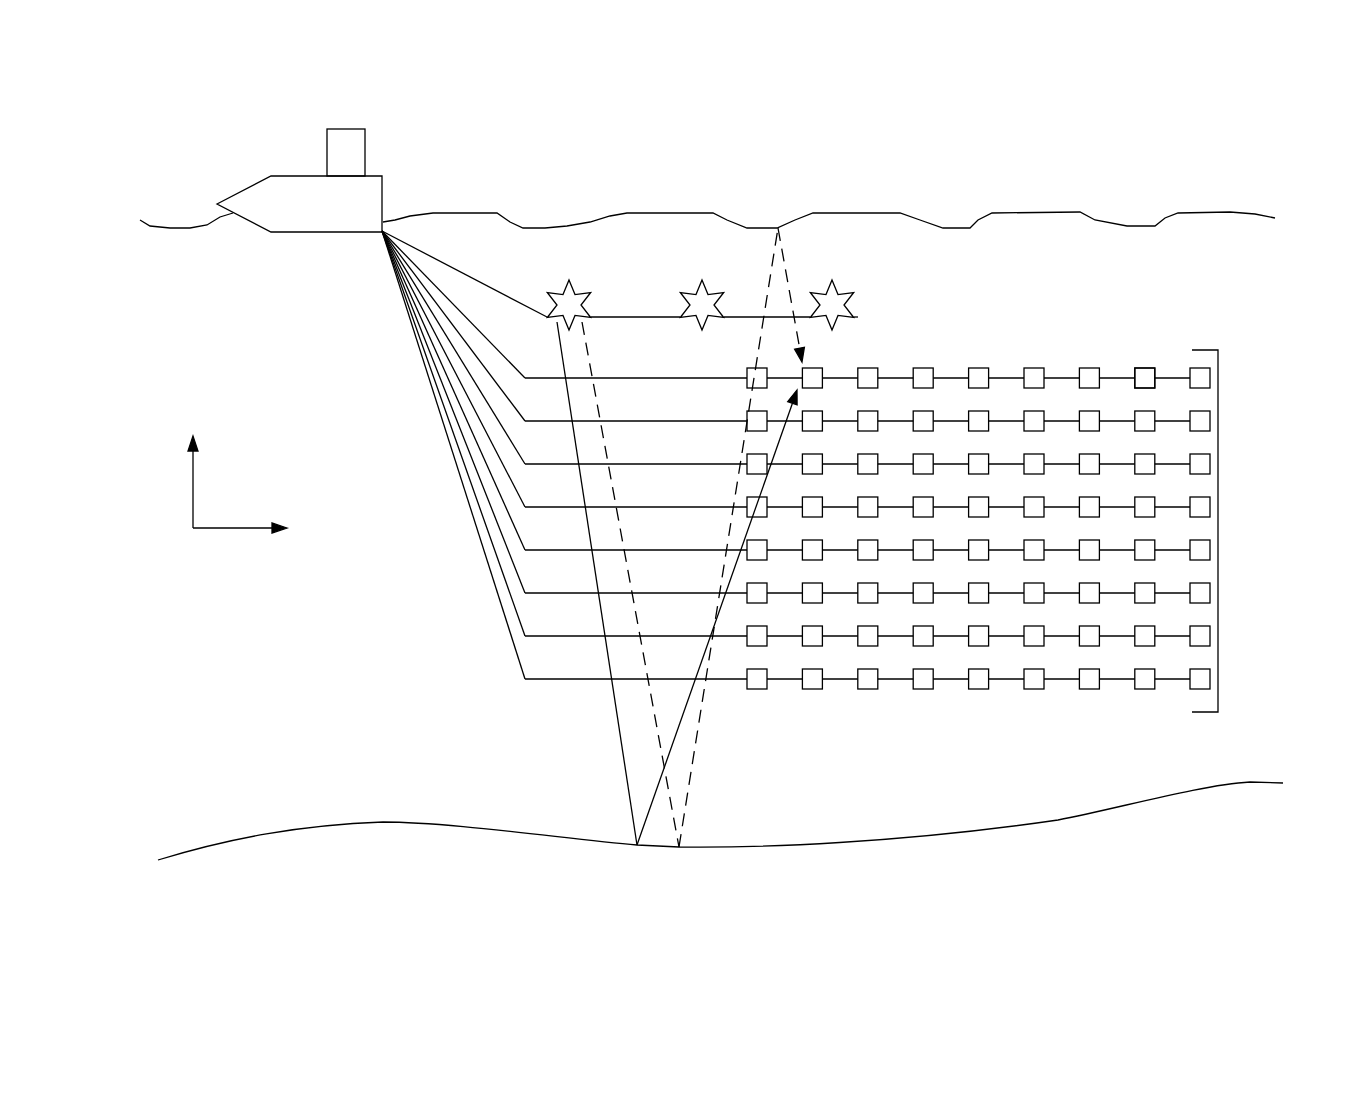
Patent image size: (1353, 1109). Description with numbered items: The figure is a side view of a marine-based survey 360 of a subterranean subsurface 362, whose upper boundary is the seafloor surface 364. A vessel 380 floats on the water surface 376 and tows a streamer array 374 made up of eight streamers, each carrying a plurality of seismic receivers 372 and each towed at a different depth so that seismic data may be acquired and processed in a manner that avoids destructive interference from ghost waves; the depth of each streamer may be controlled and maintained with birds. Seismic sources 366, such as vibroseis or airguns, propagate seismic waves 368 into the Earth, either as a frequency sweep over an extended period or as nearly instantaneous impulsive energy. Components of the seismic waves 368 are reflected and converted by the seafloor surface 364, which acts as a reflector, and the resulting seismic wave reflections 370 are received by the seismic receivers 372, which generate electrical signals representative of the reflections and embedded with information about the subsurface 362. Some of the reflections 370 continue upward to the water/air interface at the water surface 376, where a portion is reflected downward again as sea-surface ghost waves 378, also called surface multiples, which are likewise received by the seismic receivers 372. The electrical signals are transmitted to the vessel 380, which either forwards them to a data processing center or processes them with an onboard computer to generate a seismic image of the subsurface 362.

The marine-based survey 360 is at (200, 113).
The subterranean subsurface 362 is at (320, 885).
The seafloor surface 364 is at (1058, 820).
The seismic sources 366 is at (592, 314).
The seismic waves 368 is at (597, 410).
The seismic wave reflections 370 is at (735, 503).
The seismic receivers 372 is at (1145, 368).
The streamer array 374 is at (1218, 528).
The water surface 376 is at (1015, 212).
The sea-surface ghost waves 378 is at (784, 263).
The vessel 380 is at (340, 128).